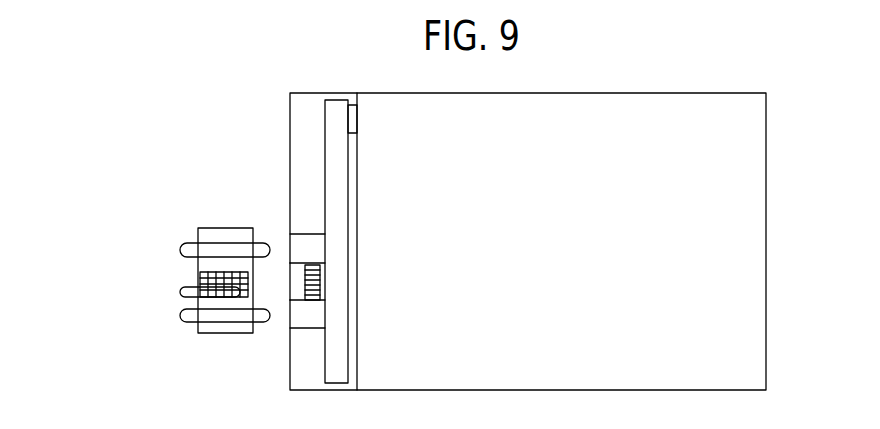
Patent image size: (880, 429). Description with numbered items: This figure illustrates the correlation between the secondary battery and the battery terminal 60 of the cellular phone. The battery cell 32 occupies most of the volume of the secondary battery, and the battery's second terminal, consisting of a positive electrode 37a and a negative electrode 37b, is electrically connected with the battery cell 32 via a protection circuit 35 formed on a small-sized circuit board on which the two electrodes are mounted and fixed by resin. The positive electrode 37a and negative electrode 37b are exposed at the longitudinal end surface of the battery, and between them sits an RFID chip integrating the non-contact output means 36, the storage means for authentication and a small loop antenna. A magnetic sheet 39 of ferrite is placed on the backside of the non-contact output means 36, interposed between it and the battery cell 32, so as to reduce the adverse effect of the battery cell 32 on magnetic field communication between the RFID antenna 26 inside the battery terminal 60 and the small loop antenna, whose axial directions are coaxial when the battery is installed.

The battery cell 32 is at (608, 125).
The protection circuit 35 is at (335, 178).
The positive electrode 37a is at (297, 322).
The negative electrode 37b is at (317, 247).
The magnetic sheet 39 is at (320, 275).
The non-contact output means 36 is at (205, 211).
The RFID antenna 26 is at (200, 292).
The battery terminal 60 is at (217, 325).